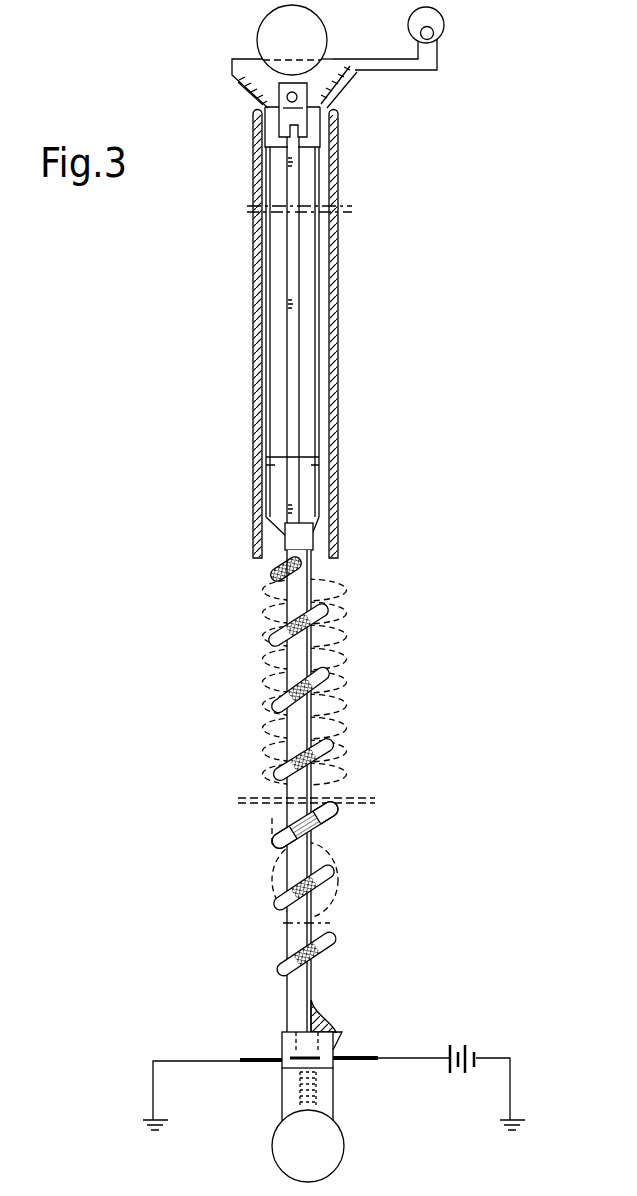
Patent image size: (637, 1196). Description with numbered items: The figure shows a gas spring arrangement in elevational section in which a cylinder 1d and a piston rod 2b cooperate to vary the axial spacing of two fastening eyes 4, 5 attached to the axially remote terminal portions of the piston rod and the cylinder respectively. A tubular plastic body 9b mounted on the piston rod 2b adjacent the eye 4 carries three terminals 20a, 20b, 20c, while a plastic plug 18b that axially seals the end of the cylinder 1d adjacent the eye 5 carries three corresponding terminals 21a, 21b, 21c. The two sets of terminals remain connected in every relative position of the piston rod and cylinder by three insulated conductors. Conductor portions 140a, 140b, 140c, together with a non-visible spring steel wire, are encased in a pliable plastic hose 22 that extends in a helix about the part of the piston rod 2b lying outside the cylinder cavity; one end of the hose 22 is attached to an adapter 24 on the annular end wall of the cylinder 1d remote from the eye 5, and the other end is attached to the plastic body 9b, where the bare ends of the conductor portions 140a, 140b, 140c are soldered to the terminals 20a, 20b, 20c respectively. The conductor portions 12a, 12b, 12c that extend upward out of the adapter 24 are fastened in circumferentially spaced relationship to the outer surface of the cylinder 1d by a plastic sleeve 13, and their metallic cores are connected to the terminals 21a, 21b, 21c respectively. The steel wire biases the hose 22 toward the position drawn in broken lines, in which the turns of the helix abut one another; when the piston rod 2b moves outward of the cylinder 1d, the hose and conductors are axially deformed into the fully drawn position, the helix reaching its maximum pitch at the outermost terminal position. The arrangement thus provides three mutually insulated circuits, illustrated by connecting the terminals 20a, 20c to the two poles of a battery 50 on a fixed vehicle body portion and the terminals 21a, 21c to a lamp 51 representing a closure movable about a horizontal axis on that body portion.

The fastening eye 5 is at (260, 32).
The lamp 51 is at (444, 24).
The terminal 21a is at (346, 88).
The terminal 21b is at (303, 92).
The terminal 21c is at (241, 97).
The plastic plug 18b is at (268, 130).
The plastic sleeve 13 is at (337, 181).
The conductor portion 12a is at (329, 318).
The conductor portion 12b is at (297, 243).
The conductor portion 12c is at (258, 313).
The cylinder 1d is at (313, 384).
The adapter 24 is at (314, 539).
The pliable plastic hose 22 is at (339, 611).
The piston rod 2b is at (313, 779).
The conductor portion 140a is at (323, 838).
The conductor portion 140b is at (293, 836).
The conductor portion 140c is at (296, 818).
The tubular plastic body 9b is at (284, 1040).
The terminal 20a is at (365, 1058).
The terminal 20b is at (323, 1062).
The terminal 20c is at (262, 1062).
The battery 50 is at (458, 1044).
The fastening eye 4 is at (335, 1146).